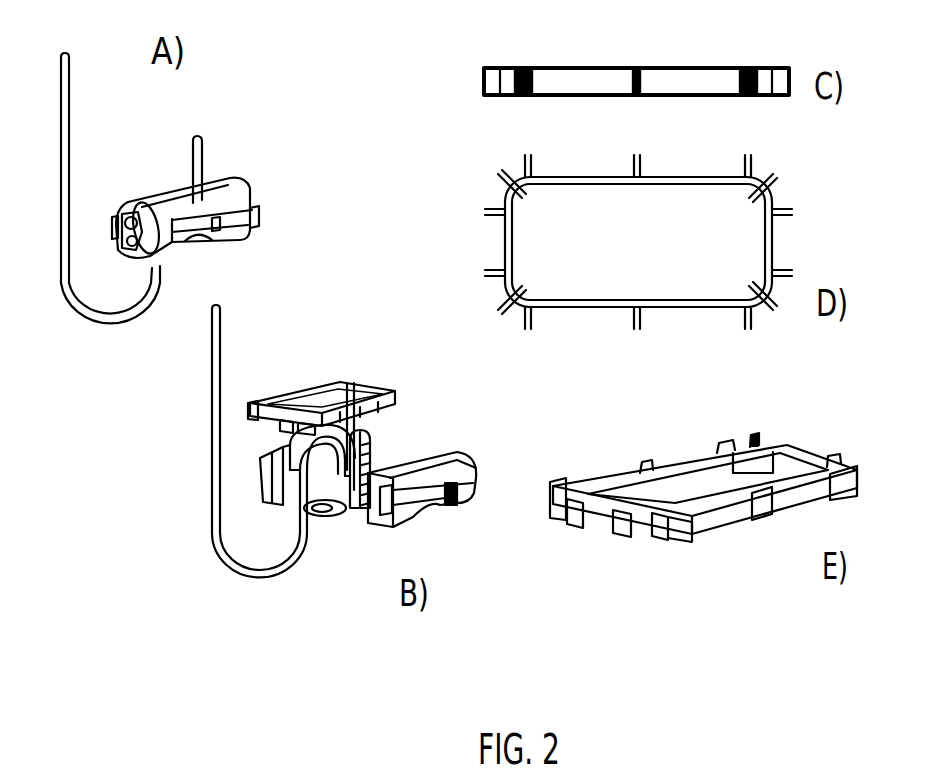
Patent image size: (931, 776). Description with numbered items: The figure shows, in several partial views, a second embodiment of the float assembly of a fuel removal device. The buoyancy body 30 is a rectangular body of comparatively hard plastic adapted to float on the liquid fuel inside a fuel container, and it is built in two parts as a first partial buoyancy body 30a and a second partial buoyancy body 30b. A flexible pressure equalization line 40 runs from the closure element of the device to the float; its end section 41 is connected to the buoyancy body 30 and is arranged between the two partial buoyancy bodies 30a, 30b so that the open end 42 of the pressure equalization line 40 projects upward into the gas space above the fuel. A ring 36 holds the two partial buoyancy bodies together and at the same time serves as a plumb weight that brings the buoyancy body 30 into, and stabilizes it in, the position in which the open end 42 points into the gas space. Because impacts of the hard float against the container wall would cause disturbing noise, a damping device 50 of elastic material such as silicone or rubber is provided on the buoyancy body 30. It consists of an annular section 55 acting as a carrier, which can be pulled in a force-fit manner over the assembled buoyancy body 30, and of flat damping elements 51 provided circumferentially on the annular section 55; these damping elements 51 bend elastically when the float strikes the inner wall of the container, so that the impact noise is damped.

The buoyancy body 30 is at (272, 178).
The first partial buoyancy body 30a is at (463, 507).
The second partial buoyancy body 30b is at (373, 447).
The ring 36 is at (327, 512).
The pressure equalization line 40 is at (70, 89).
The end section 41 is at (358, 492).
The open end 42 is at (203, 143).
The damping device 50 is at (264, 219).
The damping elements 51 is at (637, 329).
The annular section 55 is at (578, 75).